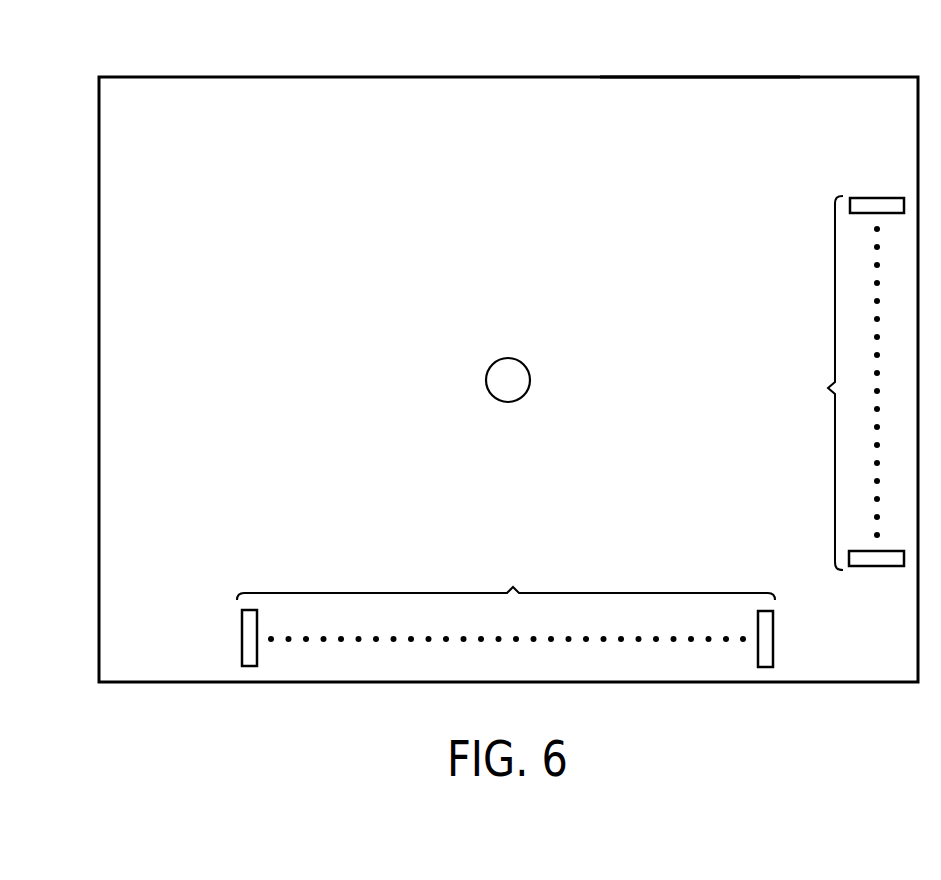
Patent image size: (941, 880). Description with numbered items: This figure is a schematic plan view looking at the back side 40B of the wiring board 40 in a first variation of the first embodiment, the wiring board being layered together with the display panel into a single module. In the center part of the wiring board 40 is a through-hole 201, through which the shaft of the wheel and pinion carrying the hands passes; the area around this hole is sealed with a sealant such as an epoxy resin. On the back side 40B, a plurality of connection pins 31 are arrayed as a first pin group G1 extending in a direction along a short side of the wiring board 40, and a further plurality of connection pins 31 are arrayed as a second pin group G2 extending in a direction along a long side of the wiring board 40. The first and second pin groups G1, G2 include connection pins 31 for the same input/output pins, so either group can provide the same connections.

The wiring board 40 is at (820, 77).
The back side of the wiring board 40B is at (738, 77).
The through-hole 201 is at (520, 393).
The connection pins 31 is at (882, 198).
The first pin group G1 is at (839, 383).
The second pin group G2 is at (506, 601).